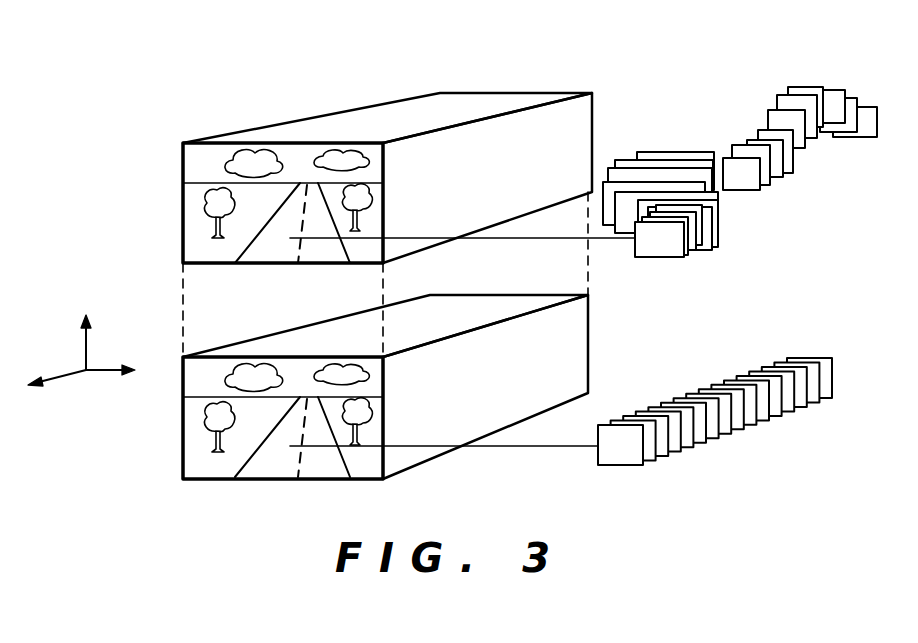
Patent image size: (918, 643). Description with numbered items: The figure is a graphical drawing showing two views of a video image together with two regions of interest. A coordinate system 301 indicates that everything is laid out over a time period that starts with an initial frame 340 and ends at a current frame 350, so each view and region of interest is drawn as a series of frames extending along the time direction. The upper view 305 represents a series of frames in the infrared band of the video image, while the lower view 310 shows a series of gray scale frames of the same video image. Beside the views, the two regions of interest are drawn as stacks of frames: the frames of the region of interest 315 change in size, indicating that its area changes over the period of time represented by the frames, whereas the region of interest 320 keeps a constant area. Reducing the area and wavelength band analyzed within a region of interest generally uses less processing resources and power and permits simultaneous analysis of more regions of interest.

The coordinate system 301 is at (60, 357).
The view 305 is at (387, 142).
The view 310 is at (505, 296).
The region of interest 315 is at (838, 100).
The region of interest 320 is at (772, 368).
The initial frame 340 is at (513, 92).
The current frame 350 is at (260, 143).